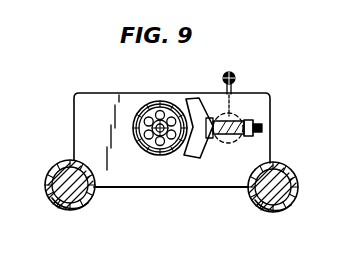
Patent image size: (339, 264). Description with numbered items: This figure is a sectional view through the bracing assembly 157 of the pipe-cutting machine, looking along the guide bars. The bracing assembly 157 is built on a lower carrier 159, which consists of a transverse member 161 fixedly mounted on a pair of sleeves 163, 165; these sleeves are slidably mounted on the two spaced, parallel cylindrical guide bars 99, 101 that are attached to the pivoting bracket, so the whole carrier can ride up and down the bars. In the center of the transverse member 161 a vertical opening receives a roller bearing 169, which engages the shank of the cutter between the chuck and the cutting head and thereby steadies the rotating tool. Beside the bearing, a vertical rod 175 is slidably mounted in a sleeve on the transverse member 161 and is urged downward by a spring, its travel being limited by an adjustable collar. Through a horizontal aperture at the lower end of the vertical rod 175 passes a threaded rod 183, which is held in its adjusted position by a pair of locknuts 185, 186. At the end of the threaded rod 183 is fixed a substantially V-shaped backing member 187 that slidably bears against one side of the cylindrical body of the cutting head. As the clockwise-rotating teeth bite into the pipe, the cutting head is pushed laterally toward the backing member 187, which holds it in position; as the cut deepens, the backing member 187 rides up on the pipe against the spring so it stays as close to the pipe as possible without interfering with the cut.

The bracing assembly 157 is at (287, 81).
The lower carrier 159 is at (122, 188).
The transverse member 161 is at (212, 178).
The sleeve 163 is at (297, 172).
The sleeve 165 is at (53, 172).
The cylindrical guide bar 99 is at (275, 213).
The cylindrical guide bar 101 is at (57, 208).
The roller bearing 169 is at (199, 106).
The vertical rod 175 is at (232, 140).
The threaded rod 183 is at (259, 128).
The locknut 185 is at (251, 118).
The locknut 186 is at (214, 140).
The backing member 187 is at (230, 63).